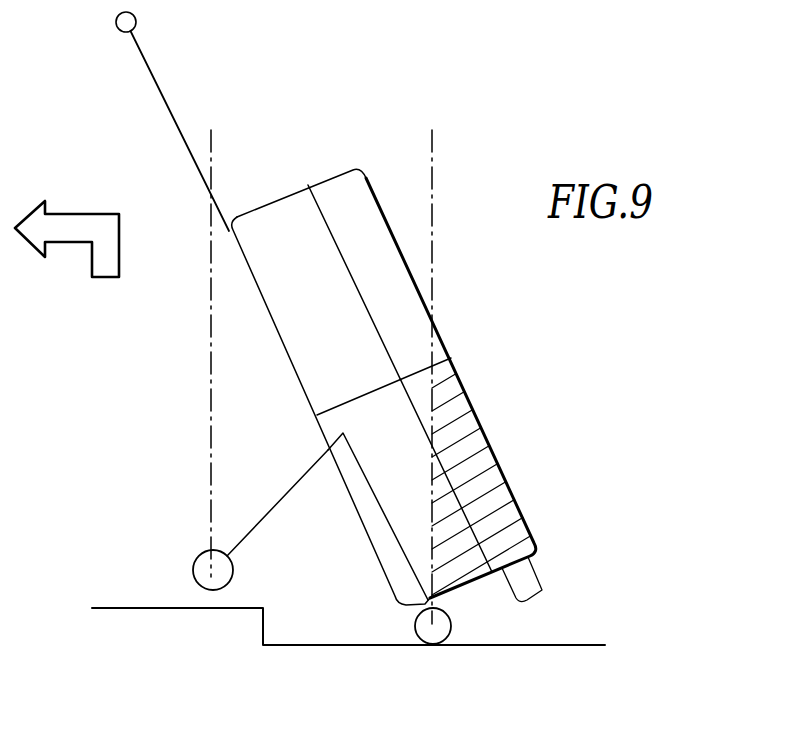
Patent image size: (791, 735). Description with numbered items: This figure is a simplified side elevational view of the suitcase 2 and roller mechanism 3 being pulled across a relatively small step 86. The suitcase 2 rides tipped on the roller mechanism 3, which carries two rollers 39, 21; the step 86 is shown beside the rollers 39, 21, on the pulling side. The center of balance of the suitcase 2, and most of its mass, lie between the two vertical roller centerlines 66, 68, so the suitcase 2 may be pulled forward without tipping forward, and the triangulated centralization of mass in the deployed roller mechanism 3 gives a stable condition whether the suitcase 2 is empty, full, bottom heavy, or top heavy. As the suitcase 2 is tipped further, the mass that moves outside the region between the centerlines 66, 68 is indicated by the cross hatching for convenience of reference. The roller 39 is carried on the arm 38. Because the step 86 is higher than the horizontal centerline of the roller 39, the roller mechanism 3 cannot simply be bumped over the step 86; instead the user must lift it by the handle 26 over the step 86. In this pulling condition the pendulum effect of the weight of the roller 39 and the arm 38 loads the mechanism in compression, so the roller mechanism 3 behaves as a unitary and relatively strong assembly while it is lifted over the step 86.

The suitcase 2 is at (467, 338).
The roller mechanism 3 is at (332, 541).
The roller 21 is at (443, 630).
The handle 26 is at (120, 83).
The arm 38 is at (288, 488).
The roller 39 is at (203, 568).
The roller centerline 66 is at (213, 147).
The roller centerline 68 is at (434, 147).
The step 86 is at (262, 627).